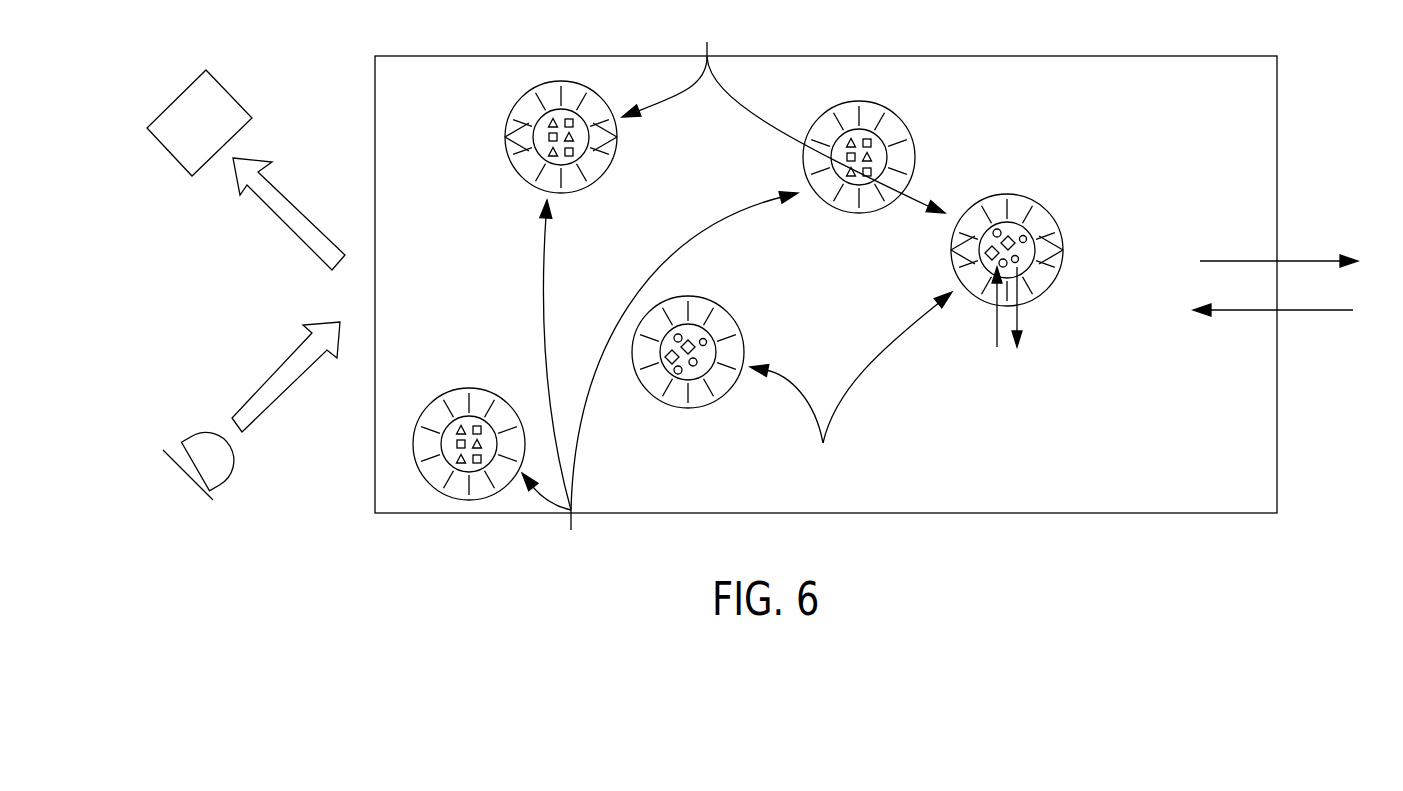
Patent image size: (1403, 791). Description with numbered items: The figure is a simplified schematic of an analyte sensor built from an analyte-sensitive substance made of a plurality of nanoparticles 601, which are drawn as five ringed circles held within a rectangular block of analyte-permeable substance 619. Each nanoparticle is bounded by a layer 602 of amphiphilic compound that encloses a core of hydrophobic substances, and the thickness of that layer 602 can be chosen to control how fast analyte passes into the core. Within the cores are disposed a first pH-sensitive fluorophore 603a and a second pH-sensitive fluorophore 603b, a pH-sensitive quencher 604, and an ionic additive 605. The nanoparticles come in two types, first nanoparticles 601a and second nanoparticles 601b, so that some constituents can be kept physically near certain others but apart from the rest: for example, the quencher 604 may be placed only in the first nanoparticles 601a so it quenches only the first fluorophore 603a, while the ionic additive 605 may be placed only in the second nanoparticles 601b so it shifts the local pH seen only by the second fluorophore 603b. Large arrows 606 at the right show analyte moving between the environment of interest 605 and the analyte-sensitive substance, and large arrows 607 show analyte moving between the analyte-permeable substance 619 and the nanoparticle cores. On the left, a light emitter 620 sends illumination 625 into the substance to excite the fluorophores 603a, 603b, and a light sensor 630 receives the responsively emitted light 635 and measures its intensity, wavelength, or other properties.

The nanoparticles 601 is at (783, 109).
The first nanoparticles 601a is at (660, 383).
The second nanoparticles 601b is at (851, 390).
The layer of amphiphilic compound 602 is at (457, 398).
The first pH-sensitive fluorophore 603a is at (505, 138).
The second pH-sensitive fluorophore 603b is at (1063, 251).
The pH-sensitive quencher 604 is at (617, 138).
The ionic additive 605 is at (951, 251).
The large arrows 606 is at (1298, 242).
The large arrows 607 is at (980, 320).
The analyte-permeable substance 619 is at (1208, 118).
The light emitter 620 is at (178, 443).
The illumination 625 is at (260, 382).
The light sensor 630 is at (172, 157).
The responsively emitted light 635 is at (287, 227).